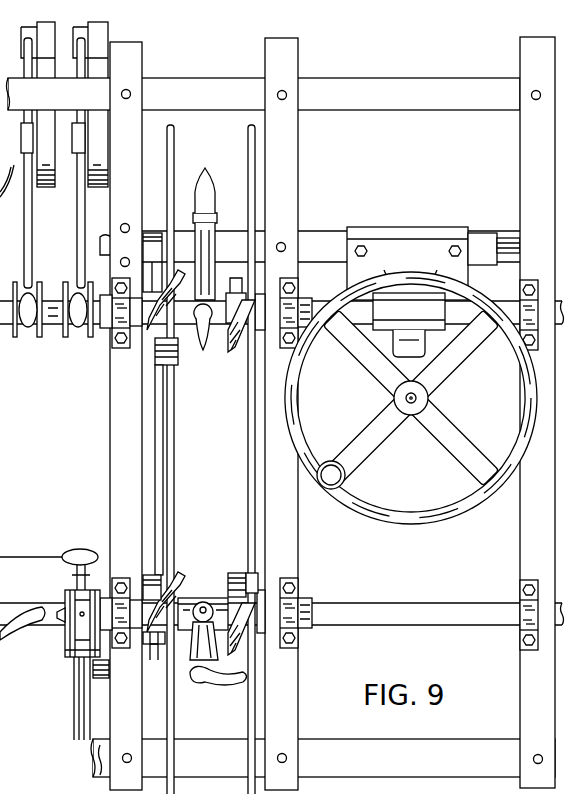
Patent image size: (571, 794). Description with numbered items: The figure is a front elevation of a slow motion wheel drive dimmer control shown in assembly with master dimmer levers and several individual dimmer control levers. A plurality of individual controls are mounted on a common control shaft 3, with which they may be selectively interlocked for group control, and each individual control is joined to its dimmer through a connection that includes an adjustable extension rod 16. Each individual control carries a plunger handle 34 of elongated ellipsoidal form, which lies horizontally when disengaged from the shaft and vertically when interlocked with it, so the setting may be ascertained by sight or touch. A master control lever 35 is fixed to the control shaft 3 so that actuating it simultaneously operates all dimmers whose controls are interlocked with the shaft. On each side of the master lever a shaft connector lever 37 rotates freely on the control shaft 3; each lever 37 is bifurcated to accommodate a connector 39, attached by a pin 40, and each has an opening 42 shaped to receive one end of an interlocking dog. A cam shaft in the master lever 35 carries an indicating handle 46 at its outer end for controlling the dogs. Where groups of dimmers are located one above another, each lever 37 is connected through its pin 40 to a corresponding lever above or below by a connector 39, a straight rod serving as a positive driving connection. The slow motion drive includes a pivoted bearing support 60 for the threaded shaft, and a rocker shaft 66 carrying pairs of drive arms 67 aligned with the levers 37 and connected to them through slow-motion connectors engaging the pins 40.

The control shaft 3 is at (510, 312).
The adjustable extension rod 16 is at (74, 664).
The handle 34 is at (29, 337).
The master control lever 35 is at (196, 660).
The shaft connector lever 37 is at (228, 572).
The connector 39 is at (248, 129).
The pin 40 is at (226, 583).
The opening 42 is at (232, 340).
The indicating handle 46 is at (244, 677).
The bearing support 60 is at (388, 345).
The rocker shaft 66 is at (508, 237).
The drive arm 67 is at (232, 193).